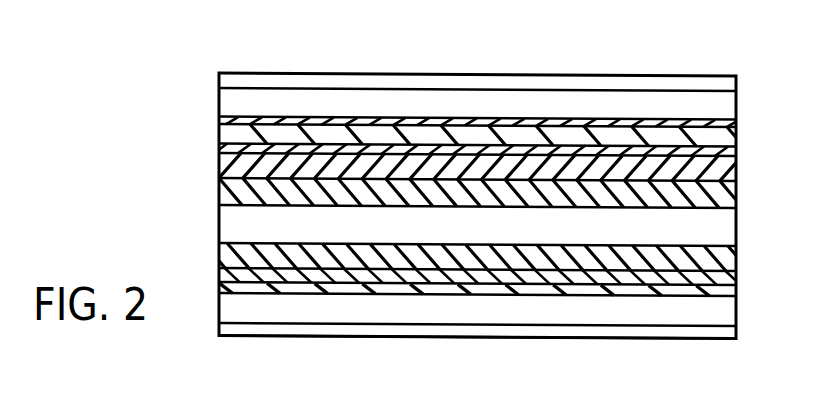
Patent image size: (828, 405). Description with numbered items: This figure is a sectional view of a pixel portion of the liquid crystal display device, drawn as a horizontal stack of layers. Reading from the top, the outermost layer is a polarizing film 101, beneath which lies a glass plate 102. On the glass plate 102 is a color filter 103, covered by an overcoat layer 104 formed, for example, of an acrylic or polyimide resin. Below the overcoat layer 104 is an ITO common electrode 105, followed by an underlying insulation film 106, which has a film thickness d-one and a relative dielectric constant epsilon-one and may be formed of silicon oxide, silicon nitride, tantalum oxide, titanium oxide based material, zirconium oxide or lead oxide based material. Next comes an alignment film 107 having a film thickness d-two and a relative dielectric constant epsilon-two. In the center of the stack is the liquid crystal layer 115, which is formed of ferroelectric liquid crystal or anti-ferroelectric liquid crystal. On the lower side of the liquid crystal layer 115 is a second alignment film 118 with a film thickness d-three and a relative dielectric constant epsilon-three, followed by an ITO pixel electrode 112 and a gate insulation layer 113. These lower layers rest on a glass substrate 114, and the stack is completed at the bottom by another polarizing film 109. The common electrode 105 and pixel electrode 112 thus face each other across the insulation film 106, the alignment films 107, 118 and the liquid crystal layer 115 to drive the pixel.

The polarizing film 101 is at (266, 77).
The glass plate 102 is at (350, 95).
The color filter 103 is at (410, 118).
The overcoat layer 104 is at (468, 130).
The ITO common electrode 105 is at (540, 147).
The underlying insulation film 106 is at (602, 162).
The alignment film 107 is at (673, 192).
The polarizing film 109 is at (292, 328).
The ITO pixel electrode 112 is at (415, 278).
The gate insulation layer 113 is at (477, 290).
The glass substrate 114 is at (547, 308).
The liquid crystal layer 115 is at (610, 227).
The alignment film 118 is at (677, 258).